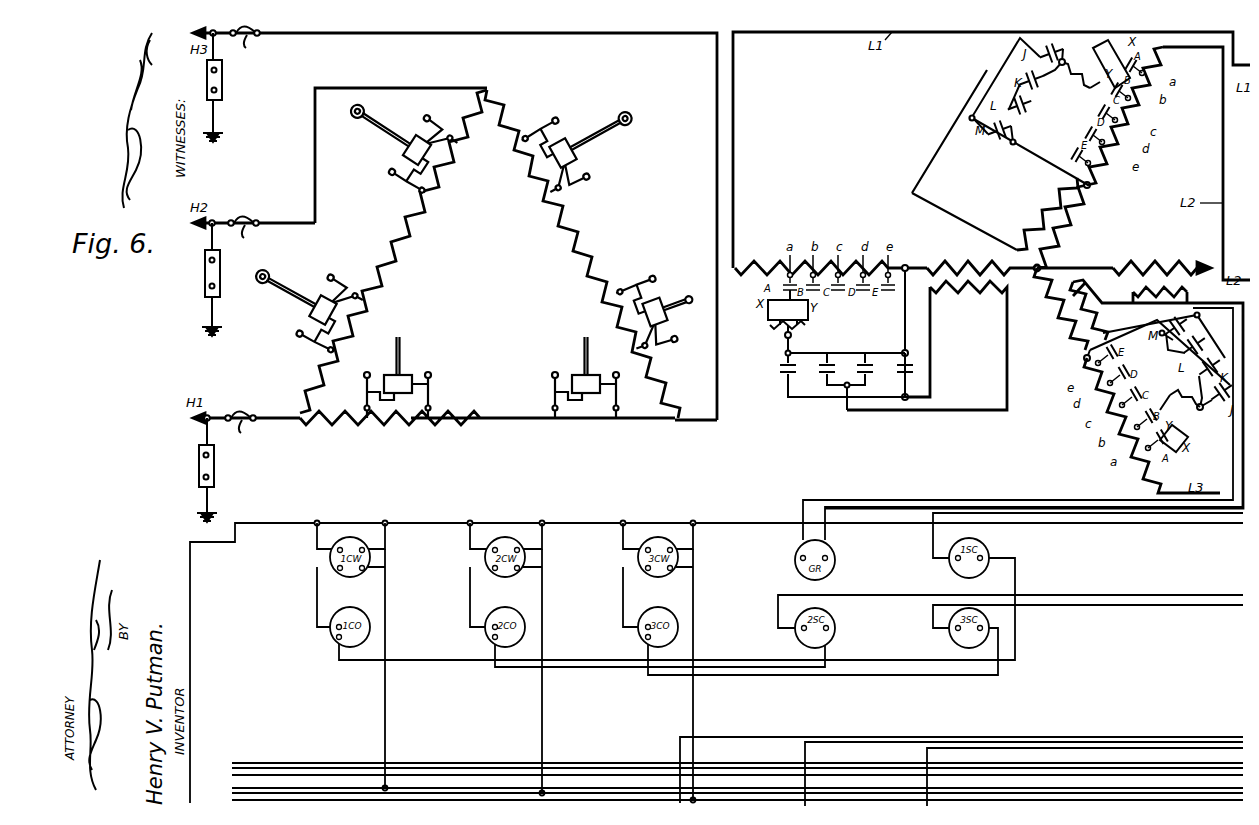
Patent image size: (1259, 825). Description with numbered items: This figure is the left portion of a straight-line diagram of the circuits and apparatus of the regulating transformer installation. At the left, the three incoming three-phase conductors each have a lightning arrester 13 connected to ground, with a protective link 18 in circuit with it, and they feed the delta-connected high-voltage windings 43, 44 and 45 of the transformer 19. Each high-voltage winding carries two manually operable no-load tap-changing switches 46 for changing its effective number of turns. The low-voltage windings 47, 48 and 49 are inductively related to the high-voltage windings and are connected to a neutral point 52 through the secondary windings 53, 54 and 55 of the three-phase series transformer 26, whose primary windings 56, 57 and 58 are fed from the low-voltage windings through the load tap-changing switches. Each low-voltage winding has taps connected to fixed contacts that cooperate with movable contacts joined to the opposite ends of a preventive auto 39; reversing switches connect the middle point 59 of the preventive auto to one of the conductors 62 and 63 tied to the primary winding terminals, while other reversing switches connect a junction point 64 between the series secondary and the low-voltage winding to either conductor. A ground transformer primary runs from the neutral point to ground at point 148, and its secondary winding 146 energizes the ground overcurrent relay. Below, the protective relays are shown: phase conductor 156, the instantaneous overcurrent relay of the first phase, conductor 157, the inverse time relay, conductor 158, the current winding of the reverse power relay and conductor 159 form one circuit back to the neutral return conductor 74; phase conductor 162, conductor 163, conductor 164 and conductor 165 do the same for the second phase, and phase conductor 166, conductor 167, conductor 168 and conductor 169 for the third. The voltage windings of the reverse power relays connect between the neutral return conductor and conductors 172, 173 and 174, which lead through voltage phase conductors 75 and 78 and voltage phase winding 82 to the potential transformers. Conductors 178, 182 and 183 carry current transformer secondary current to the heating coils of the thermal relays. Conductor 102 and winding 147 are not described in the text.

The lightning arresters 13 is at (224, 80).
The protective links 18 is at (236, 235).
The transformer 19 is at (673, 211).
The three-phase series transformer 26 is at (1010, 225).
The preventive auto 39 is at (1063, 86).
The high-voltage winding 43 is at (463, 412).
The high-voltage winding 44 is at (399, 268).
The high-voltage winding 45 is at (560, 232).
The no-load tap-changing switches 46 is at (400, 128).
The low-voltage winding 47 is at (831, 264).
The low-voltage winding 48 is at (1146, 110).
The low-voltage winding 49 is at (1135, 477).
The neutral point 52 is at (1045, 266).
The secondary winding 53 is at (976, 262).
The secondary winding 54 is at (1083, 210).
The secondary winding 55 is at (1034, 394).
The primary winding 56 is at (927, 345).
The primary winding 57 is at (1028, 213).
The primary winding 58 is at (1046, 320).
The middle point 59 is at (1060, 60).
The conductor 62 is at (990, 160).
The conductor 63 is at (945, 212).
The junction point 64 is at (907, 264).
The neutral return conductor 74 is at (419, 526).
The voltage phase conductor 75 is at (403, 806).
The voltage phase conductor 78 is at (560, 806).
The voltage phase winding 82 is at (772, 782).
The conductor 102 is at (398, 90).
The secondary winding 146 is at (1190, 292).
The resistor 147 is at (1150, 252).
The ground point 148 is at (1193, 266).
The phase conductor 156 is at (1182, 528).
The conductor 157 is at (1016, 578).
The conductor 158 is at (316, 594).
The conductor 159 is at (316, 549).
The phase conductor 162 is at (1148, 598).
The conductor 163 is at (590, 670).
The conductor 164 is at (470, 594).
The conductor 165 is at (470, 549).
The phase conductor 166 is at (1122, 608).
The conductor 167 is at (862, 676).
The conductor 168 is at (623, 594).
The conductor 169 is at (623, 549).
The conductor 172 is at (386, 712).
The conductor 173 is at (543, 712).
The conductor 174 is at (694, 704).
The conductor 178 is at (928, 755).
The conductor 182 is at (806, 751).
The conductor 183 is at (680, 752).